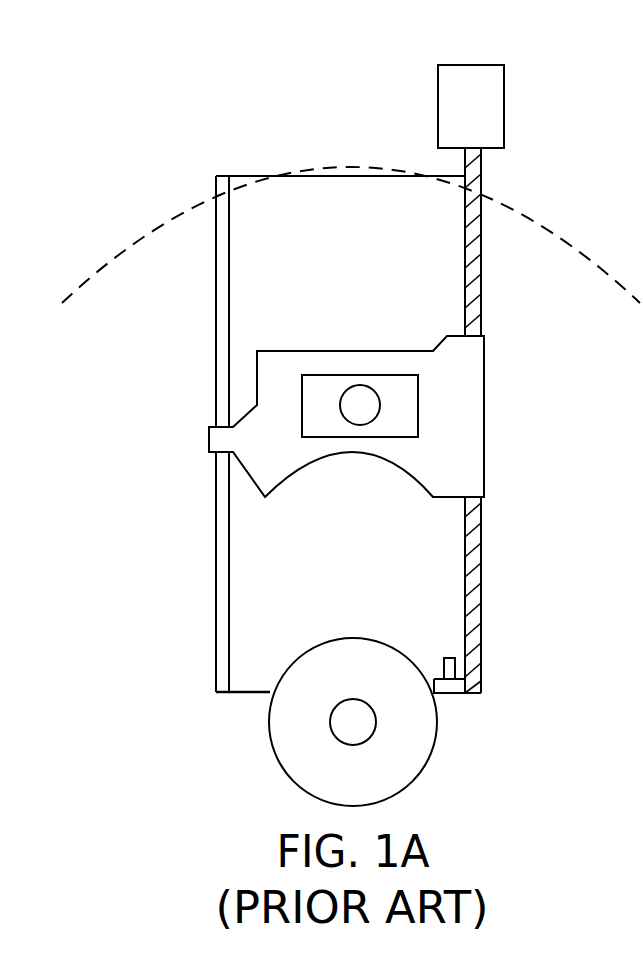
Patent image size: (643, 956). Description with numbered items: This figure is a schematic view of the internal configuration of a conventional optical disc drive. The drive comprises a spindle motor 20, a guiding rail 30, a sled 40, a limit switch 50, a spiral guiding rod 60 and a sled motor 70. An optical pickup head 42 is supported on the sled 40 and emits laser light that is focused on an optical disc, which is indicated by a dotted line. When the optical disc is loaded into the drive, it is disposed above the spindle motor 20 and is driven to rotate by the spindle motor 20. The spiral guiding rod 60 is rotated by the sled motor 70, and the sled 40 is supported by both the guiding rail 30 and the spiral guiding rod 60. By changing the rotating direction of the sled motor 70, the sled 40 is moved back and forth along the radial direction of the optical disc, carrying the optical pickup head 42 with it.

The spindle motor 20 is at (270, 719).
The guiding rail 30 is at (220, 314).
The sled 40 is at (480, 404).
The optical pickup head 42 is at (346, 388).
The limit switch 50 is at (450, 694).
The spiral guiding rod 60 is at (482, 294).
The sled motor 70 is at (500, 149).